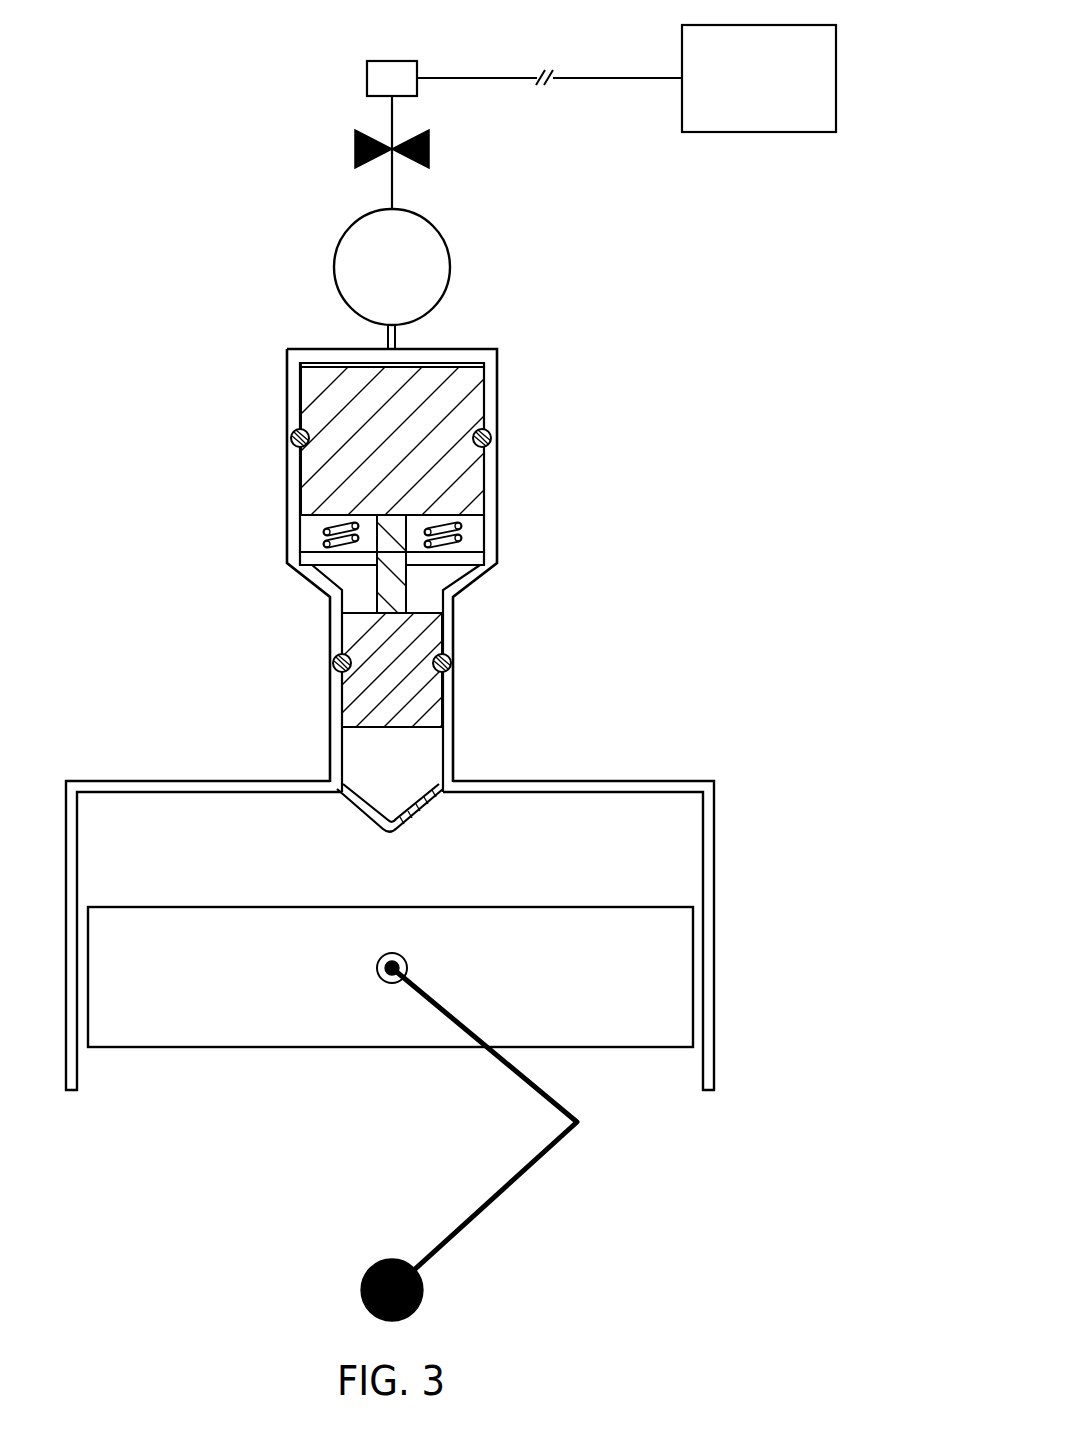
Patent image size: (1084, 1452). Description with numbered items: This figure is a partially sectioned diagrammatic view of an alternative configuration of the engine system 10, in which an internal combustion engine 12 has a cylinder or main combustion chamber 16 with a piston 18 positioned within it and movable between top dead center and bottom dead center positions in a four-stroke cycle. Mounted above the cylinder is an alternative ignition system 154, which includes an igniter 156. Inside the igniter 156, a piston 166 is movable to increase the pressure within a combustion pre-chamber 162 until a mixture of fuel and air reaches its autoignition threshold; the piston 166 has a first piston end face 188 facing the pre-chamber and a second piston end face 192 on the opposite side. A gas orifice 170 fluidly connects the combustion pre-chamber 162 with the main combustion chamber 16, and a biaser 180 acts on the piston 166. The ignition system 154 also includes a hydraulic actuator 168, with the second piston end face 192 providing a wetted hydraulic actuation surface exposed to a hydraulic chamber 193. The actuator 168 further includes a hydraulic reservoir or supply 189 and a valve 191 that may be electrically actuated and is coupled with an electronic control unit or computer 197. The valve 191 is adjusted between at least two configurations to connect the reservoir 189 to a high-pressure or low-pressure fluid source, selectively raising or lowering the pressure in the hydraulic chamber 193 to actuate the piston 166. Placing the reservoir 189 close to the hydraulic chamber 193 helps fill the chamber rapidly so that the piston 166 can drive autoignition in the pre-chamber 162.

The engine system 10 is at (770, 521).
The internal combustion engine 12 is at (772, 796).
The cylinder or main combustion chamber 16 is at (640, 832).
The piston 18 is at (648, 940).
The ignition system 154 is at (652, 436).
The igniter 156 is at (505, 392).
The combustion pre-chamber 162 is at (420, 744).
The piston 166 is at (484, 503).
The hydraulic actuator 168 is at (246, 163).
The gas orifice 170 is at (366, 800).
The biaser 180 is at (452, 554).
The first piston end face 188 is at (388, 733).
The hydraulic reservoir or supply 189 is at (446, 232).
The valve 191 is at (343, 96).
The second piston end face 192 is at (457, 364).
The hydraulic chamber 193 is at (340, 366).
The electronic control unit or computer 197 is at (760, 132).